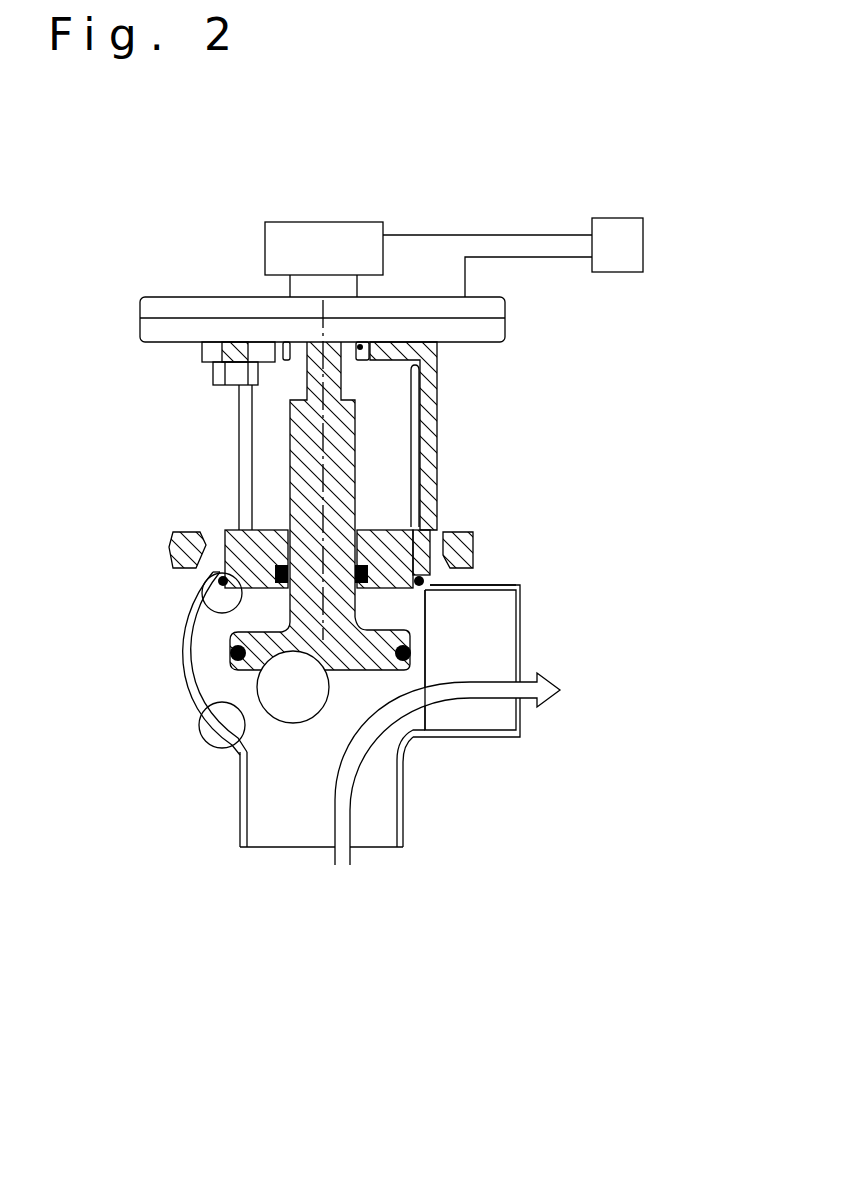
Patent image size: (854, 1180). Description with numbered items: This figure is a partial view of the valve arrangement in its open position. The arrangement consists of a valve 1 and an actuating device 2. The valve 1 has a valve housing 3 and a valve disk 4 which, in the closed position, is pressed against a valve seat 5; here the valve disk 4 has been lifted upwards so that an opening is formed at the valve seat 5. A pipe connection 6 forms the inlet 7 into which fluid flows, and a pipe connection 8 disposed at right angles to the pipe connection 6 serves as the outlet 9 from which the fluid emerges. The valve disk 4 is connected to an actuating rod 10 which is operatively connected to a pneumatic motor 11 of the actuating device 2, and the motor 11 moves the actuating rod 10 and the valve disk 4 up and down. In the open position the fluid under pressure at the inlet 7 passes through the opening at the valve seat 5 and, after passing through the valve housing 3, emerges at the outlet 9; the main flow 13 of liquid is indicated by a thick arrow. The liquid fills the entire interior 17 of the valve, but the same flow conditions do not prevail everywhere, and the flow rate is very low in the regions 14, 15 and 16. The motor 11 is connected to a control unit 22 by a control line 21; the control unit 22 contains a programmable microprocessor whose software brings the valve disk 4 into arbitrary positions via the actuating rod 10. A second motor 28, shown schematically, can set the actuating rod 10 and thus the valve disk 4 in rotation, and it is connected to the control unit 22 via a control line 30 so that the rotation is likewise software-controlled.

The valve 1 is at (180, 677).
The actuating device 2 is at (515, 308).
The valve housing 3 is at (173, 532).
The valve disk 4 is at (383, 652).
The valve seat 5 is at (240, 757).
The pipe connection 6 is at (240, 843).
The inlet 7 is at (285, 847).
The pipe connection 8 is at (503, 585).
The outlet 9 is at (520, 635).
The actuating rod 10 is at (340, 477).
The pneumatic motor 11 is at (490, 307).
The main flow 13 is at (528, 688).
The region 14 is at (172, 543).
The region 15 is at (257, 687).
The region 16 is at (231, 731).
The interior 17 is at (363, 693).
The control line 21 is at (548, 257).
The control unit 22 is at (617, 245).
The second motor 28 is at (363, 233).
The control line 30 is at (488, 235).